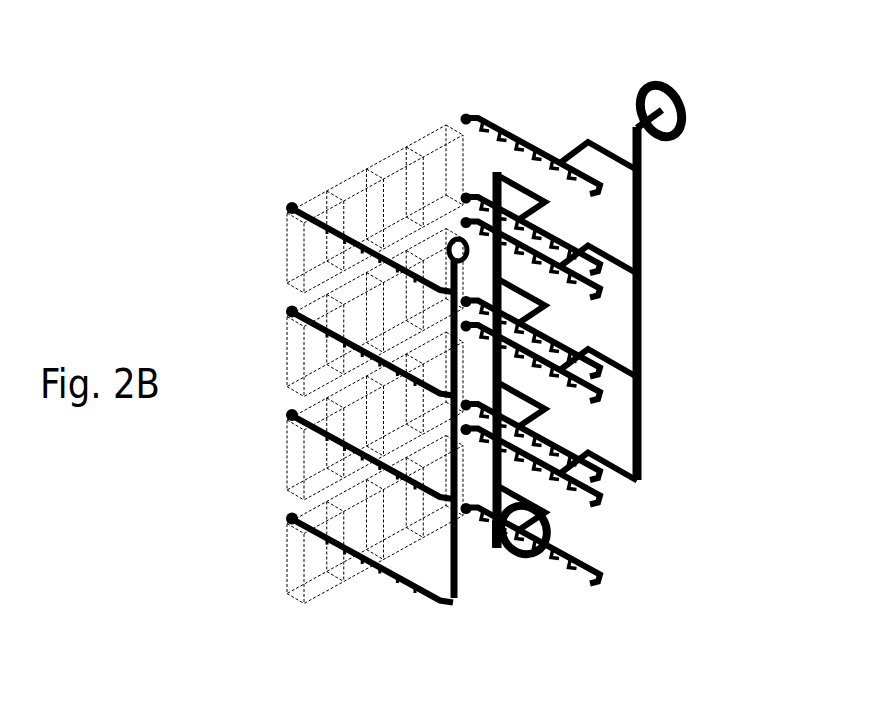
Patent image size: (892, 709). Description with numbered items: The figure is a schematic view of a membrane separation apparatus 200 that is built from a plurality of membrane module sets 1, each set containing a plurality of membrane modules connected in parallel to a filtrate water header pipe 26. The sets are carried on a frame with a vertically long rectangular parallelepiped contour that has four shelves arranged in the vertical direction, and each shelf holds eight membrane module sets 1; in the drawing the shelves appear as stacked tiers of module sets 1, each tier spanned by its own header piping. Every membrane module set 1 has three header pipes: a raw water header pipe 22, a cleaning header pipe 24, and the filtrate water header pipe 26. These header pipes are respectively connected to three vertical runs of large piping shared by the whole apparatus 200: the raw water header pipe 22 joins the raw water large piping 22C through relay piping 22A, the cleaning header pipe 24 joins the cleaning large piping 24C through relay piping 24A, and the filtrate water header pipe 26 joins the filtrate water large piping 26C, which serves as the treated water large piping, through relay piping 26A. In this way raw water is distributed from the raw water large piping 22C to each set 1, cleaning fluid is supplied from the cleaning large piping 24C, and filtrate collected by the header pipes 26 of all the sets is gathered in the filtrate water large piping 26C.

The membrane separation apparatus 200 is at (296, 153).
The membrane module set 1 is at (269, 242).
The cleaning header pipe 24 is at (315, 200).
The relay piping 24A is at (317, 328).
The cleaning large piping 24C is at (423, 588).
The filtrate water header pipe 26 is at (443, 133).
The relay piping 26A is at (507, 235).
The filtrate water large piping 26C is at (640, 212).
The raw water header pipe 22 is at (427, 220).
The relay piping 22A is at (548, 340).
The raw water large piping 22C is at (503, 366).